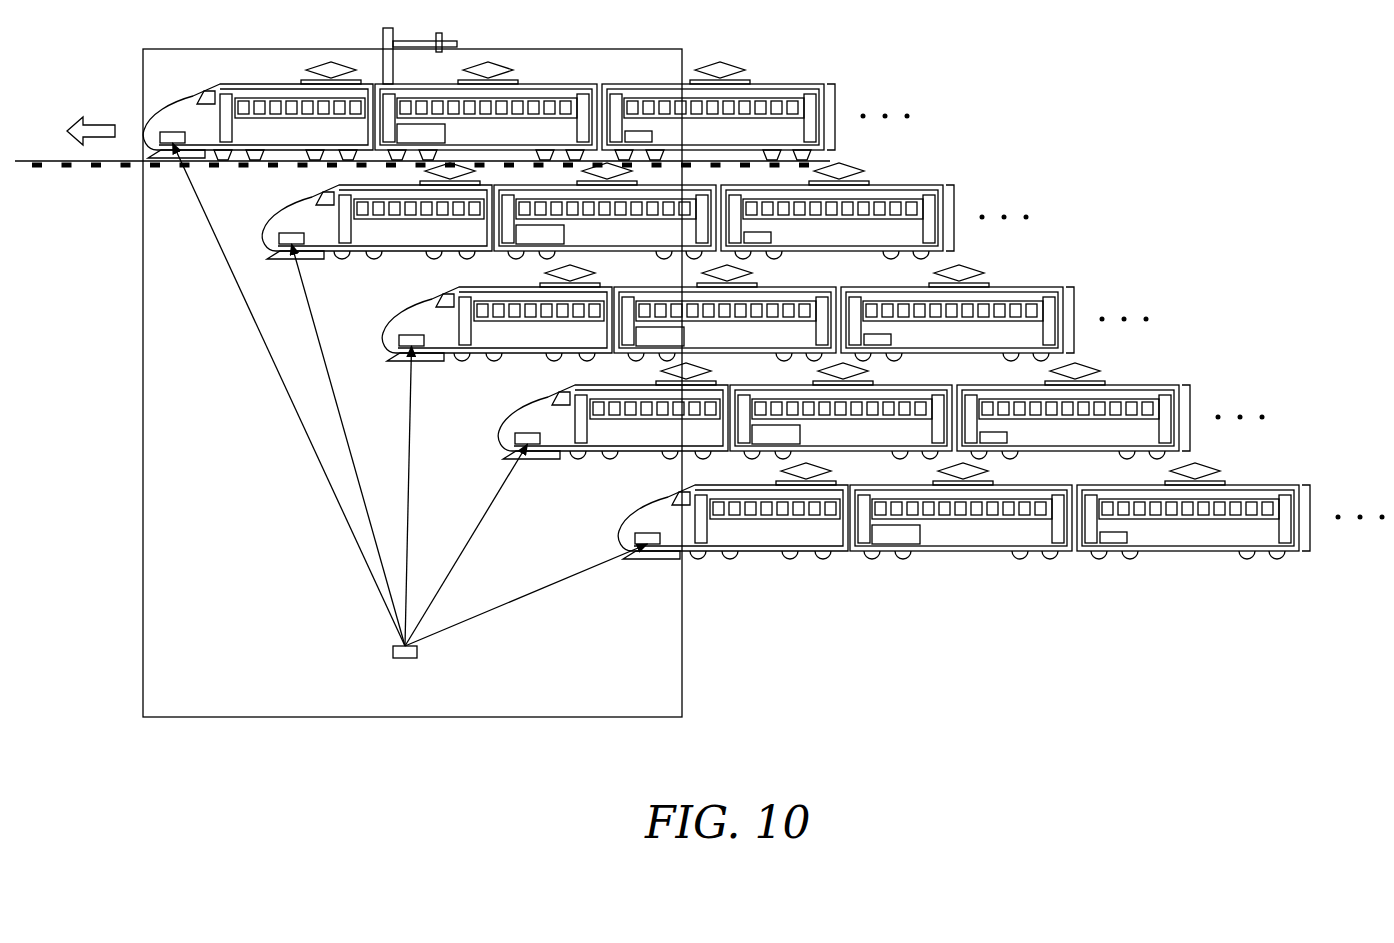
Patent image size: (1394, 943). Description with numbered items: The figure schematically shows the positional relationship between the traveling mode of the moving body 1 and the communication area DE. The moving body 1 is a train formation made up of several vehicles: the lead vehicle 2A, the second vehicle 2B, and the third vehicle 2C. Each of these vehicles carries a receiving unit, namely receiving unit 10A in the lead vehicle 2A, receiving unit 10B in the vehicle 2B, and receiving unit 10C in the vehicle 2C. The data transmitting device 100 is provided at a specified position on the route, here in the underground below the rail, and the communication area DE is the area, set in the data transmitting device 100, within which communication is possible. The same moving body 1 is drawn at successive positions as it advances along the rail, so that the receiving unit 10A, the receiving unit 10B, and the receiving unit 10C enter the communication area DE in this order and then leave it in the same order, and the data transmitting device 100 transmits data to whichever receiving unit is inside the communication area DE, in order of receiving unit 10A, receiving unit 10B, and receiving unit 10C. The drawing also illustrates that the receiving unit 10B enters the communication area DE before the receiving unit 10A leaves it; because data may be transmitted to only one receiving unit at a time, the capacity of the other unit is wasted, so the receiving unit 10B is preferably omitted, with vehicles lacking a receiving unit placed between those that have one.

The moving body 1 is at (1001, 549).
The vehicle 2A is at (741, 585).
The vehicle 2B is at (961, 585).
The vehicle 2C is at (1193, 585).
The receiving unit 10A is at (650, 552).
The receiving unit 10B is at (887, 556).
The receiving unit 10C is at (1110, 552).
The data transmitting device 100 is at (388, 661).
The communication area DE is at (143, 411).